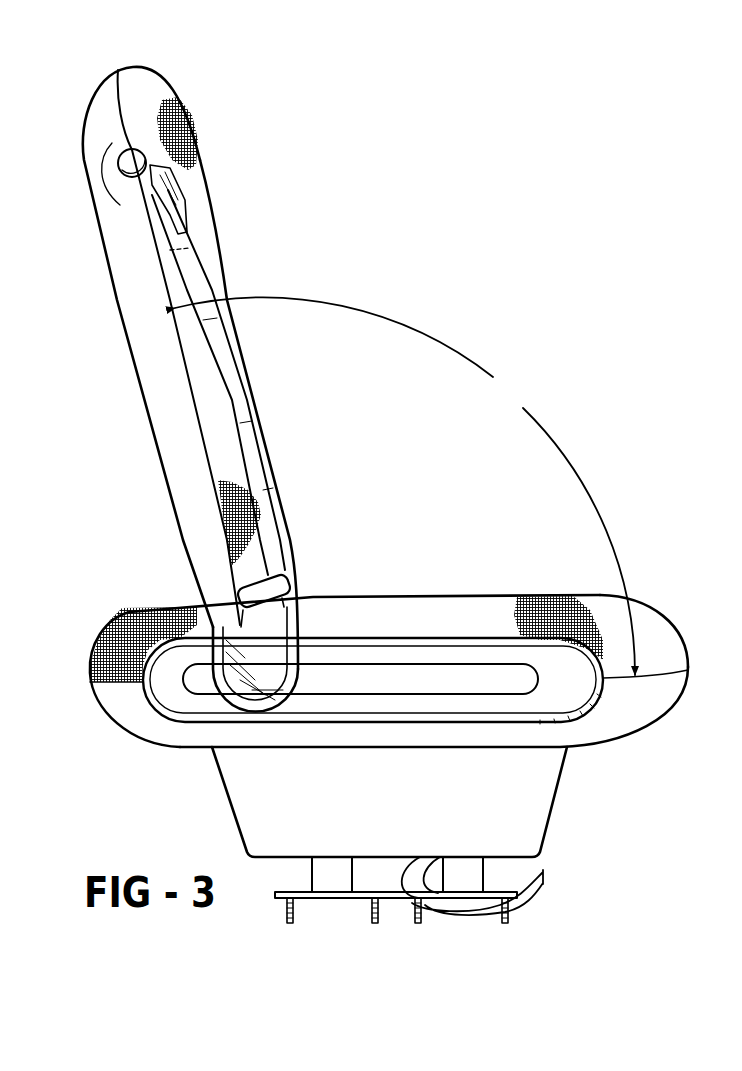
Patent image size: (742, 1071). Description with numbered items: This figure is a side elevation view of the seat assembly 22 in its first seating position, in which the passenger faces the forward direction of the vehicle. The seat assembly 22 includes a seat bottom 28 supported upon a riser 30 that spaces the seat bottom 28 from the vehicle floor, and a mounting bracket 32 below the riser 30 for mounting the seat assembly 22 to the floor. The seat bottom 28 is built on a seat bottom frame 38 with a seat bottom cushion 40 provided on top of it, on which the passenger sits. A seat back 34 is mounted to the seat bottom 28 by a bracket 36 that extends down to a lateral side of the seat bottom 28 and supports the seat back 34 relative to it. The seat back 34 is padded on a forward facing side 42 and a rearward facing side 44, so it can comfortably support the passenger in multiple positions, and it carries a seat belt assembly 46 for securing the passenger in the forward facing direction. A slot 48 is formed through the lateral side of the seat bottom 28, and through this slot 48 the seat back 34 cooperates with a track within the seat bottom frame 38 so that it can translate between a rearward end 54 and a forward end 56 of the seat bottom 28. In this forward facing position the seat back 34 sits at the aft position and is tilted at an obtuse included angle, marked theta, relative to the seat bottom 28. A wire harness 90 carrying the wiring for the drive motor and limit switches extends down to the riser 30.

The seat assembly 22 is at (495, 308).
The seat bottom 28 is at (664, 713).
The riser 30 is at (558, 838).
The mounting bracket 32 is at (518, 893).
The seat back 34 is at (202, 160).
The bracket 36 is at (240, 703).
The seat bottom frame 38 is at (123, 745).
The seat bottom cushion 40 is at (360, 602).
The forward facing side 42 is at (223, 260).
The rearward facing side 44 is at (160, 466).
The seat belt assembly 46 is at (230, 374).
The slot 48 is at (478, 672).
The rearward end 54 is at (122, 622).
The forward end 56 is at (682, 634).
The wire harness 90 is at (400, 882).